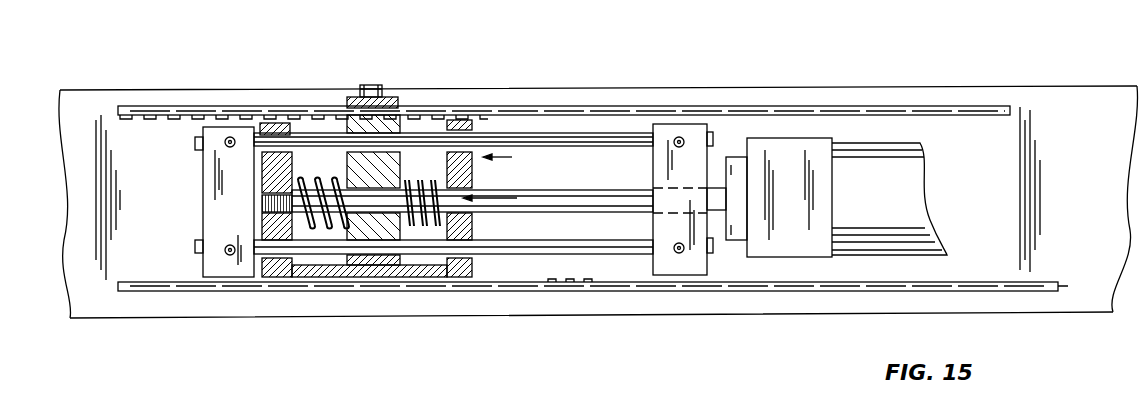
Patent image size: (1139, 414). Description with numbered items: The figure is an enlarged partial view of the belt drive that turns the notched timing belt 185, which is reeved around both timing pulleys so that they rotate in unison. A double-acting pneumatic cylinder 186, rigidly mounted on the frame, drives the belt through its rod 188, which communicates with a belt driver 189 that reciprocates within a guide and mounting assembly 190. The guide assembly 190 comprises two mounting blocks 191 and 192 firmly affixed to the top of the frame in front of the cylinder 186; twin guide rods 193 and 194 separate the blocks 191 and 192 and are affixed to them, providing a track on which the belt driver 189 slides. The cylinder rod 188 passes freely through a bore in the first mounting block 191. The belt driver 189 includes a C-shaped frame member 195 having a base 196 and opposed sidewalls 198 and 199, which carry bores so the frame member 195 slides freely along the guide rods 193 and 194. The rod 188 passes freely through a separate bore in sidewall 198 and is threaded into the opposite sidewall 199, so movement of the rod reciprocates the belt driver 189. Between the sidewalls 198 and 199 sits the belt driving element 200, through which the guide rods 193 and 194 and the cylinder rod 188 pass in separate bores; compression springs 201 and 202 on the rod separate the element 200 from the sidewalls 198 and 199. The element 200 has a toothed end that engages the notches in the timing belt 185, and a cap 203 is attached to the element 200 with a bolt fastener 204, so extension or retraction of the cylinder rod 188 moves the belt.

The notched timing belt 185 is at (893, 110).
The double-acting pneumatic cylinder 186 is at (907, 170).
The rod 188 is at (617, 203).
The belt driver 189 is at (527, 163).
The guide and mounting assembly 190 is at (198, 160).
The first mounting block 191 is at (697, 127).
The mounting block 192 is at (230, 140).
The guide rod 193 is at (557, 243).
The guide rod 194 is at (553, 140).
The C-shaped frame member 195 is at (413, 268).
The base 196 is at (340, 262).
The sidewall 198 is at (477, 228).
The sidewall 199 is at (262, 172).
The belt driving element 200 is at (390, 170).
The compression spring 201 is at (477, 177).
The compression spring 202 is at (338, 176).
The cap 203 is at (386, 98).
The bolt fastener 204 is at (372, 84).